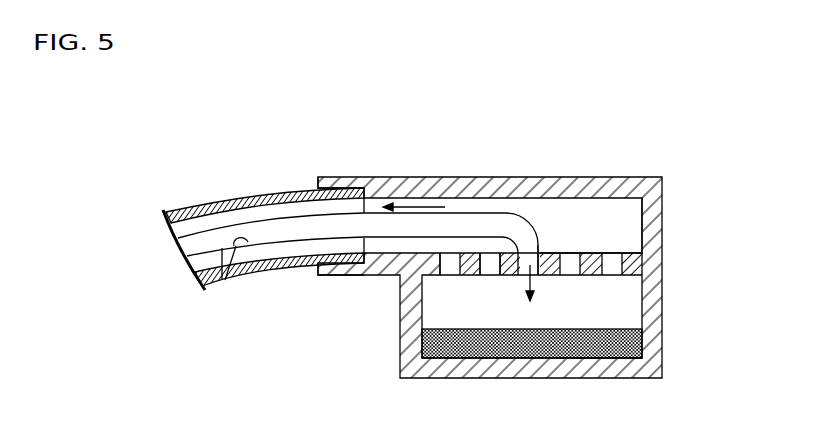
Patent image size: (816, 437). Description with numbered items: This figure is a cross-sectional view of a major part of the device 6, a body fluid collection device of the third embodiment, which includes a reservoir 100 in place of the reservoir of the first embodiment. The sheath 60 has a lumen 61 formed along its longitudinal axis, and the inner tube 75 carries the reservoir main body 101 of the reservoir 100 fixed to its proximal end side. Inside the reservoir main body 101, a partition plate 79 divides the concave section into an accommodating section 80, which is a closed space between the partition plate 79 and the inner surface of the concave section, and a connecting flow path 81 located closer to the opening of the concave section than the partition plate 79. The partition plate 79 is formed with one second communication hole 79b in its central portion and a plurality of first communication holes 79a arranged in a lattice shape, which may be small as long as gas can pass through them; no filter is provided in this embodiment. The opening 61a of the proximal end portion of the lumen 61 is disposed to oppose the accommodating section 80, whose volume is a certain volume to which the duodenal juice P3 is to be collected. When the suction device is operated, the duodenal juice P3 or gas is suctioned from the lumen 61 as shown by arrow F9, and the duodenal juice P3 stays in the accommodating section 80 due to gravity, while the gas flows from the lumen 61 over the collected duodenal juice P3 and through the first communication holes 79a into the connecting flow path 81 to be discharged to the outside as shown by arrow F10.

The device 6 is at (633, 132).
The reservoir 100 is at (312, 163).
The reservoir main body 101 is at (377, 185).
The inner tube 75 is at (243, 197).
The sheath 60 is at (222, 258).
The lumen 61 is at (241, 246).
The opening of the proximal end portion of the lumen 61a is at (538, 286).
The arrow indicating gas flow F10 is at (417, 204).
The arrow indicating suction flow F9 is at (511, 297).
The partition plate 79 is at (541, 233).
The first communication holes 79a is at (608, 270).
The second communication hole 79b is at (526, 276).
The connecting flow path 81 is at (606, 220).
The accommodating section 80 is at (633, 347).
The duodenal juice P3 is at (592, 345).